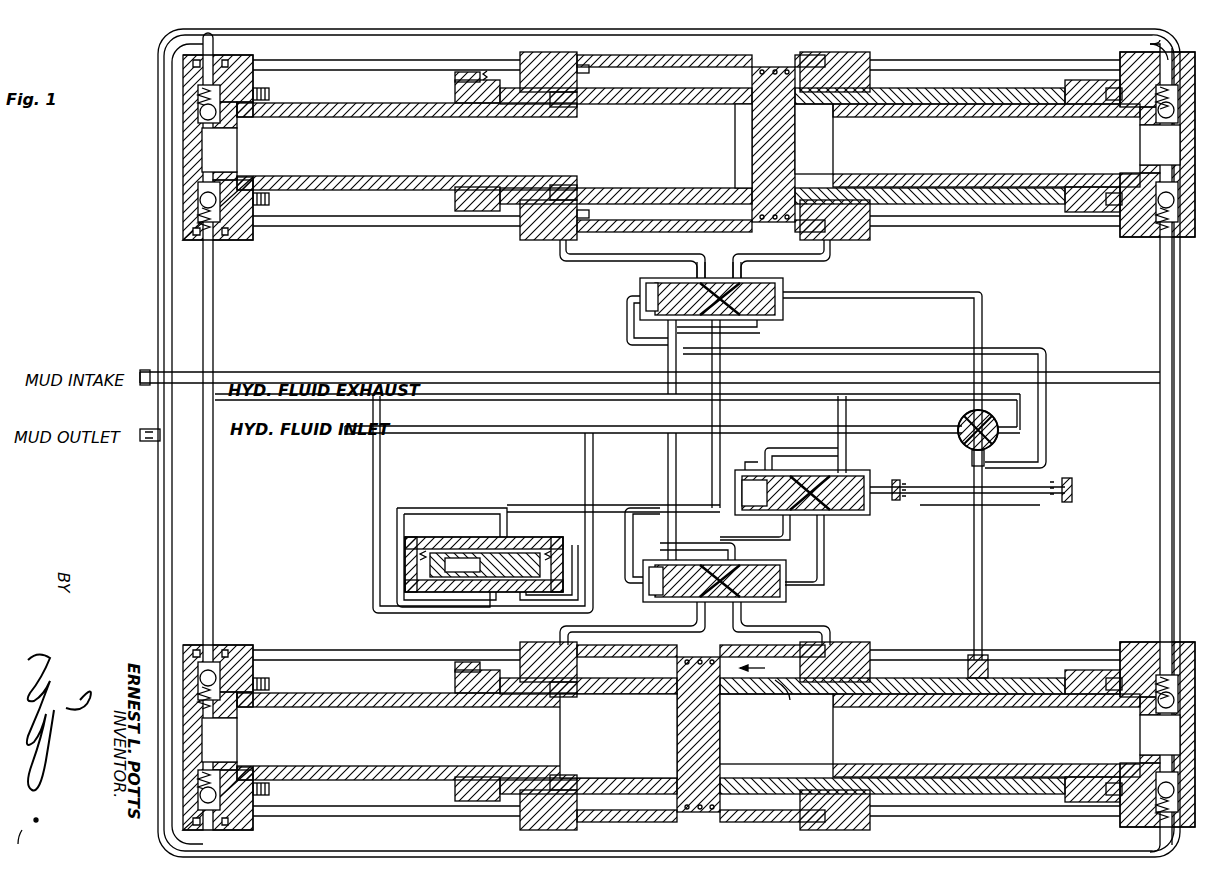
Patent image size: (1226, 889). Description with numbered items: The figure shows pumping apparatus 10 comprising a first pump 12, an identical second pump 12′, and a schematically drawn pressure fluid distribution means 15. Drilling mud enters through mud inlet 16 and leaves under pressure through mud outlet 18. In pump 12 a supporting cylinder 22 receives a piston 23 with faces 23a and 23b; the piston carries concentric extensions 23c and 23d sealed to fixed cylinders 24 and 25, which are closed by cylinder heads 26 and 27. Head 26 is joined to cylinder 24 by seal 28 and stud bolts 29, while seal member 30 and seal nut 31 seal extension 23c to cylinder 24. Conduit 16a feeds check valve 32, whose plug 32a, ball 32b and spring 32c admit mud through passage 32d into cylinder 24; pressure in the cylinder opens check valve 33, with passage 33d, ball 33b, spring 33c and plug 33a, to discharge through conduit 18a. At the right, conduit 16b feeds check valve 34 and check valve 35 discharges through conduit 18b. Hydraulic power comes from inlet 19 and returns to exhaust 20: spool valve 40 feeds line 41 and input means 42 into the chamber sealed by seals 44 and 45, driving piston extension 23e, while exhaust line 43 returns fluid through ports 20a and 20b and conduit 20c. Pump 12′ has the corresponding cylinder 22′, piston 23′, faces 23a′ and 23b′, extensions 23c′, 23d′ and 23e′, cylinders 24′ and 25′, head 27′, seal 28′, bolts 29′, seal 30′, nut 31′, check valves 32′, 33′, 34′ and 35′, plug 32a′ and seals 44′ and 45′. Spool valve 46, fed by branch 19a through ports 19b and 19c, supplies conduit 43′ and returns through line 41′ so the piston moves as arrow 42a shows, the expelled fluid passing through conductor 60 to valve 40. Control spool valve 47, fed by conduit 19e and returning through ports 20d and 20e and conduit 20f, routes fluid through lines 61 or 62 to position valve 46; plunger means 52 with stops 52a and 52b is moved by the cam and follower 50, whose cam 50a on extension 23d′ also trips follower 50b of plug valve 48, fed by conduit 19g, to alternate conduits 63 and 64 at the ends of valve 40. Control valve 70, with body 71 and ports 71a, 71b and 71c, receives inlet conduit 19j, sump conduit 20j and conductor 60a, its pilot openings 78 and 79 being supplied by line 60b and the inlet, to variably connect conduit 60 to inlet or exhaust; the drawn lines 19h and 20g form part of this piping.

The pumping apparatus 10 is at (294, 520).
The first pump 12 is at (388, 248).
The second pump 12′ is at (315, 630).
The pressure fluid distribution means 15 is at (405, 345).
The mud inlet 16 is at (148, 372).
The conduit 16a is at (215, 276).
The conduit 16b is at (1172, 275).
The mud outlet 18 is at (152, 441).
The conduit 18a is at (201, 48).
The conduit 18b is at (1170, 42).
The hydraulic pressure fluid inlet 19 is at (375, 430).
The branch 19a is at (668, 458).
The inlet port 19b is at (672, 550).
The inlet port 19c is at (745, 548).
The conduit 19e is at (805, 448).
The conduit 19g is at (962, 436).
The inlet branch line 19h is at (565, 555).
The input conduit 19j is at (585, 478).
The hydraulic fluid exhaust 20 is at (418, 400).
The port 20a is at (762, 332).
The port 20b is at (645, 318).
The conduit 20c is at (668, 352).
The port 20d is at (850, 450).
The port 20e is at (748, 462).
The conduit 20f is at (846, 410).
The exhaust branch line 20g is at (1043, 408).
The conduit 20j is at (380, 472).
The supporting cylinder 22 is at (700, 56).
The supporting cylinder 22′ is at (375, 822).
The piston 23 is at (765, 150).
The piston 23′ is at (690, 742).
The piston face 23a is at (748, 135).
The piston face 23a′ is at (680, 720).
The piston face 23b is at (803, 158).
The piston face 23b′ is at (726, 750).
The cylindrical piston extension 23c is at (595, 104).
The cylindrical piston extension 23c′ is at (520, 778).
The cylindrical piston extension 23d is at (988, 104).
The cylindrical piston extension 23d′ is at (925, 678).
The encircling piston extension 23e is at (748, 232).
The encircling piston extension 23e′ is at (698, 822).
The fixed cylinder 24 is at (312, 118).
The fixed cylinder 24′ is at (322, 708).
The fixed cylinder 25 is at (945, 117).
The fixed cylinder 25′ is at (197, 740).
The cylinder head 26 is at (195, 158).
The cylinder head 27 is at (1185, 150).
The cylinder head 27′ is at (1185, 738).
The seal 28 is at (258, 118).
The seal 28′ is at (262, 706).
The stud bolts 29 is at (272, 96).
The stud bolts 29′ is at (272, 685).
The seal member 30 is at (478, 105).
The seal member 30′ is at (440, 700).
The seal nut 31 is at (455, 78).
The seal nut 31′ is at (455, 670).
The check valve means 32 is at (180, 222).
The check valve means 32′ is at (200, 640).
The plug 32a is at (203, 240).
The plug 32a′ is at (213, 645).
The ball 32b is at (200, 205).
The spring 32c is at (200, 190).
The passage 32d is at (223, 160).
The check valve means 33 is at (180, 122).
The check valve means 33′ is at (250, 830).
The plug 33a is at (222, 55).
The valve ball 33b is at (200, 100).
The spring element 33c is at (200, 90).
The passage 33d is at (219, 150).
The check valve 34 is at (1198, 205).
The check valve 34′ is at (1200, 665).
The check valve 35 is at (1135, 120).
The check valve 35′ is at (1135, 760).
The spool valve 40 is at (648, 282).
The line 41 is at (585, 262).
The line 41′ is at (648, 624).
The input means 42 is at (592, 218).
The arrow 42a is at (772, 695).
The exhaust line 43 is at (830, 258).
The conduit 43′ is at (826, 622).
The seal carrier and seal 44 is at (535, 240).
The seal carrier and seal 44′ is at (545, 650).
The seal arrangement 45 is at (864, 232).
The seal arrangement 45′ is at (835, 736).
The spool valve 46 is at (788, 596).
The control spool valve 47 is at (870, 470).
The plug valve 48 is at (960, 420).
The cam and cam follower 50 is at (958, 518).
The cam 50a is at (990, 545).
The cam follower 50b is at (972, 460).
The plunger means 52 is at (1052, 500).
The stop 52a is at (1074, 484).
The stop 52b is at (896, 500).
The fluid conductor 60 is at (720, 409).
The conductor 60a is at (608, 505).
The fluid line 60b is at (428, 505).
The line 61 is at (792, 524).
The conduit 62 is at (826, 573).
The conduit 63 is at (982, 320).
The conduit 64 is at (1046, 447).
The control valve 70 is at (420, 618).
The valve body 71 is at (485, 564).
The valve port 71a is at (490, 598).
The valve port 71b is at (522, 598).
The valve port 71c is at (500, 537).
The pilot valve opening 78 is at (410, 570).
The pilot valve opening 79 is at (562, 560).